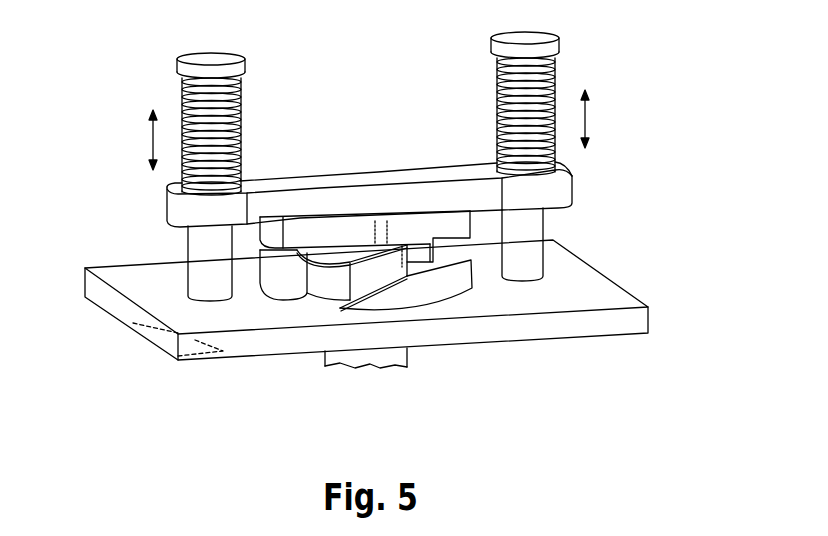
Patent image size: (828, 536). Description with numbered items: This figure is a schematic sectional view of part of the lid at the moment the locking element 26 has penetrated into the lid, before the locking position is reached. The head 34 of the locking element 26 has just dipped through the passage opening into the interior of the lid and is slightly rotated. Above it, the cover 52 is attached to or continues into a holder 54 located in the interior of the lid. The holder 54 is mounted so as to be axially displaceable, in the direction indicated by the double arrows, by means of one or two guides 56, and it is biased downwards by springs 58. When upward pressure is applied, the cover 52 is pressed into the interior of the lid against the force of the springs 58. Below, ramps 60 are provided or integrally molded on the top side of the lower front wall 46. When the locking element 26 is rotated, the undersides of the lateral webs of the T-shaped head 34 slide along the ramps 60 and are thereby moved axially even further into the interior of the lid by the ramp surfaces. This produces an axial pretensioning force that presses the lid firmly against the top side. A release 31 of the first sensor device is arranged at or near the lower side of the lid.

The locking element 26 is at (378, 362).
The release 31 is at (150, 338).
The head 34 is at (333, 290).
The lower front wall 46 is at (630, 288).
The cover 52 is at (322, 236).
The holder 54 is at (378, 166).
The guides 56 is at (207, 252).
The springs 58 is at (181, 88).
The ramps 60 is at (280, 280).